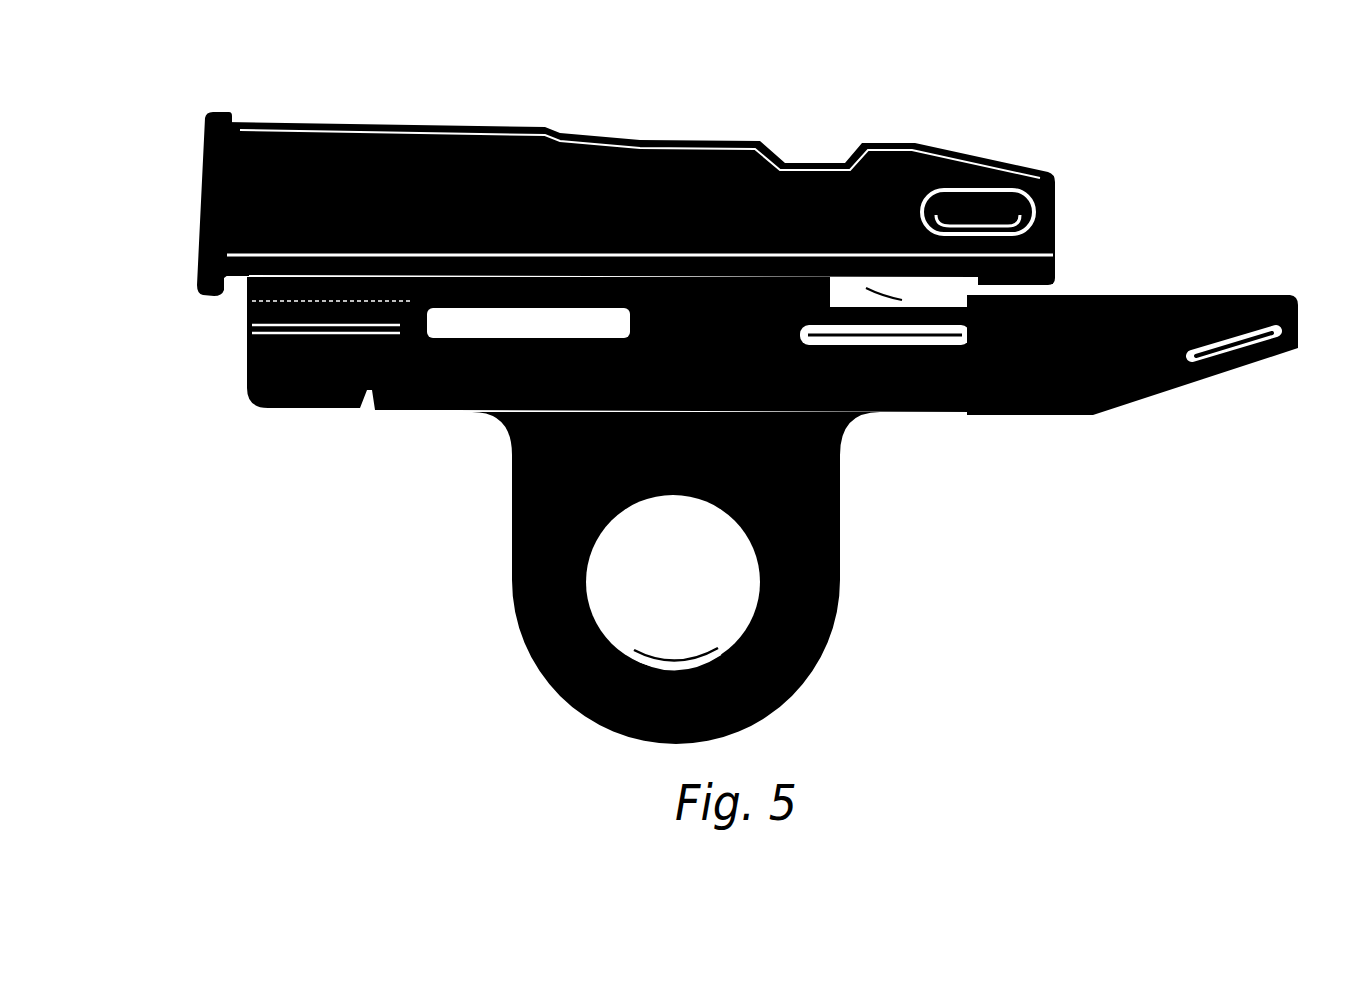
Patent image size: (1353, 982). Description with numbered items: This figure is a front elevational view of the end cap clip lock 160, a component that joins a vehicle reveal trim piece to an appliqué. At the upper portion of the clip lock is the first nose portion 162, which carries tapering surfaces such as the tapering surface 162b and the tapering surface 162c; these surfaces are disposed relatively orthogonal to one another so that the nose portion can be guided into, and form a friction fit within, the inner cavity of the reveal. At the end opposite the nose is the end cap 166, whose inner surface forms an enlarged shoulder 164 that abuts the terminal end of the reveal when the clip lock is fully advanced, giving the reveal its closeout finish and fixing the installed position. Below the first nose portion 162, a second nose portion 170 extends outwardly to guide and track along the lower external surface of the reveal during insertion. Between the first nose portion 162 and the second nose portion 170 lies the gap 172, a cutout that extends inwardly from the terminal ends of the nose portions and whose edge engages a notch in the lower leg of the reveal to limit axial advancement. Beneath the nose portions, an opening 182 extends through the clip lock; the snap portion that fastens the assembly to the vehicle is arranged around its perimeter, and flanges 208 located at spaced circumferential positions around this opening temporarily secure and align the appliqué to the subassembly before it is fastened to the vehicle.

The end cap clip lock 160 is at (720, 414).
The first nose portion 162 is at (706, 195).
The tapering surface 162b is at (1058, 251).
The tapering surface 162c is at (988, 157).
The enlarged shoulder 164 is at (222, 287).
The end cap 166 is at (201, 180).
The second nose portion 170 is at (1300, 328).
The gap 172 is at (923, 415).
The opening 182 is at (676, 578).
The flanges 208 is at (685, 499).